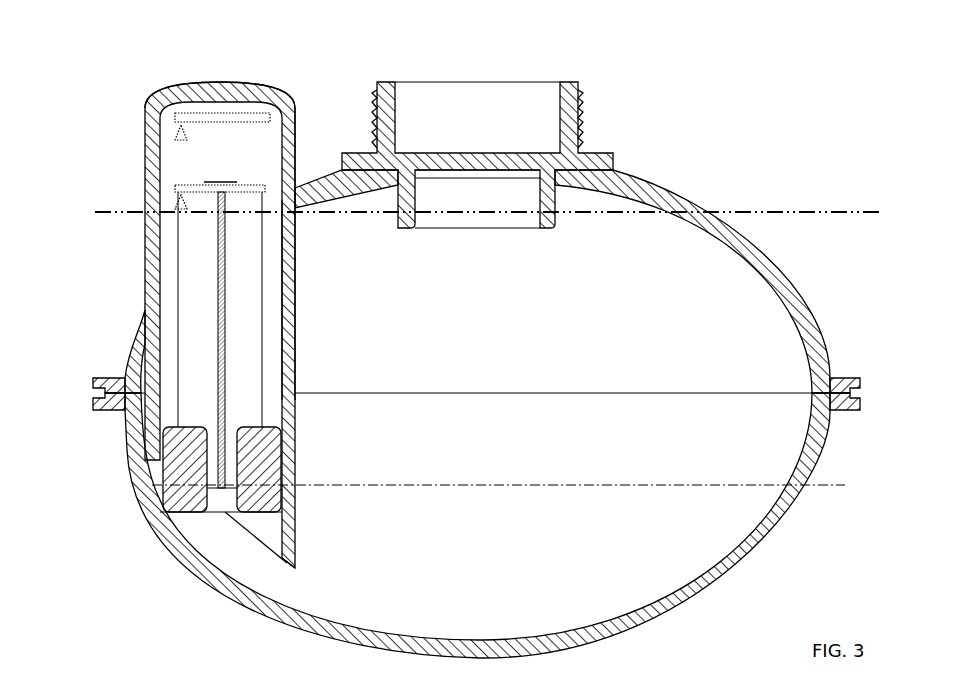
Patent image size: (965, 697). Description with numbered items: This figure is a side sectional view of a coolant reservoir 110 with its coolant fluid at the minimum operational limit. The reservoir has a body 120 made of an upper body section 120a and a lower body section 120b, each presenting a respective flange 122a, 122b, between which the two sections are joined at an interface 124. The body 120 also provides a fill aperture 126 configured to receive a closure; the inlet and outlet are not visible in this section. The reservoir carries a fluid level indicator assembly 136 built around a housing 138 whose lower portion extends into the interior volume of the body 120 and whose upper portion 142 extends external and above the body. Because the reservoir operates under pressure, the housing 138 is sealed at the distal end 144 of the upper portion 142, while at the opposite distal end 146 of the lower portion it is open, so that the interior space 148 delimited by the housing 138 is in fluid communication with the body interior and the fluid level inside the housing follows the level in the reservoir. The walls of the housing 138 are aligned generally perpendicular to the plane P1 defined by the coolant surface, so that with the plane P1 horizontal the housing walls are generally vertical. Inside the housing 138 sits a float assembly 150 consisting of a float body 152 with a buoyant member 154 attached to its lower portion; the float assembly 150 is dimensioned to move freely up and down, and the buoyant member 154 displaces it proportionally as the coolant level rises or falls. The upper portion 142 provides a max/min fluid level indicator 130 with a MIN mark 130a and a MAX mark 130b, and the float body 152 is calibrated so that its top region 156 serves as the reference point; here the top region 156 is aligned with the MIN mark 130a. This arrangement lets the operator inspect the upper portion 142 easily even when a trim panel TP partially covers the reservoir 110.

The coolant reservoir 110 is at (698, 67).
The body 120 is at (788, 278).
The upper body section 120a is at (815, 325).
The lower body section 120b is at (815, 480).
The flange 122a is at (835, 378).
The flange 122b is at (843, 411).
The interface 124 is at (852, 393).
The fill aperture 126 is at (557, 98).
The max/min fluid level indicator 130 is at (167, 168).
The MIN mark 130a is at (178, 190).
The MAX mark 130b is at (242, 118).
The fluid level indicator assembly 136 is at (107, 138).
The housing 138 is at (295, 282).
The upper portion 142 is at (295, 132).
The distal end 144 is at (147, 108).
The distal end 146 is at (294, 555).
The interior space 148 is at (221, 173).
The float assembly 150 is at (172, 279).
The float body 152 is at (247, 350).
The buoyant member 154 is at (262, 468).
The top region 156 is at (263, 192).
The trim panel TP is at (749, 212).
The plane P1 is at (686, 486).